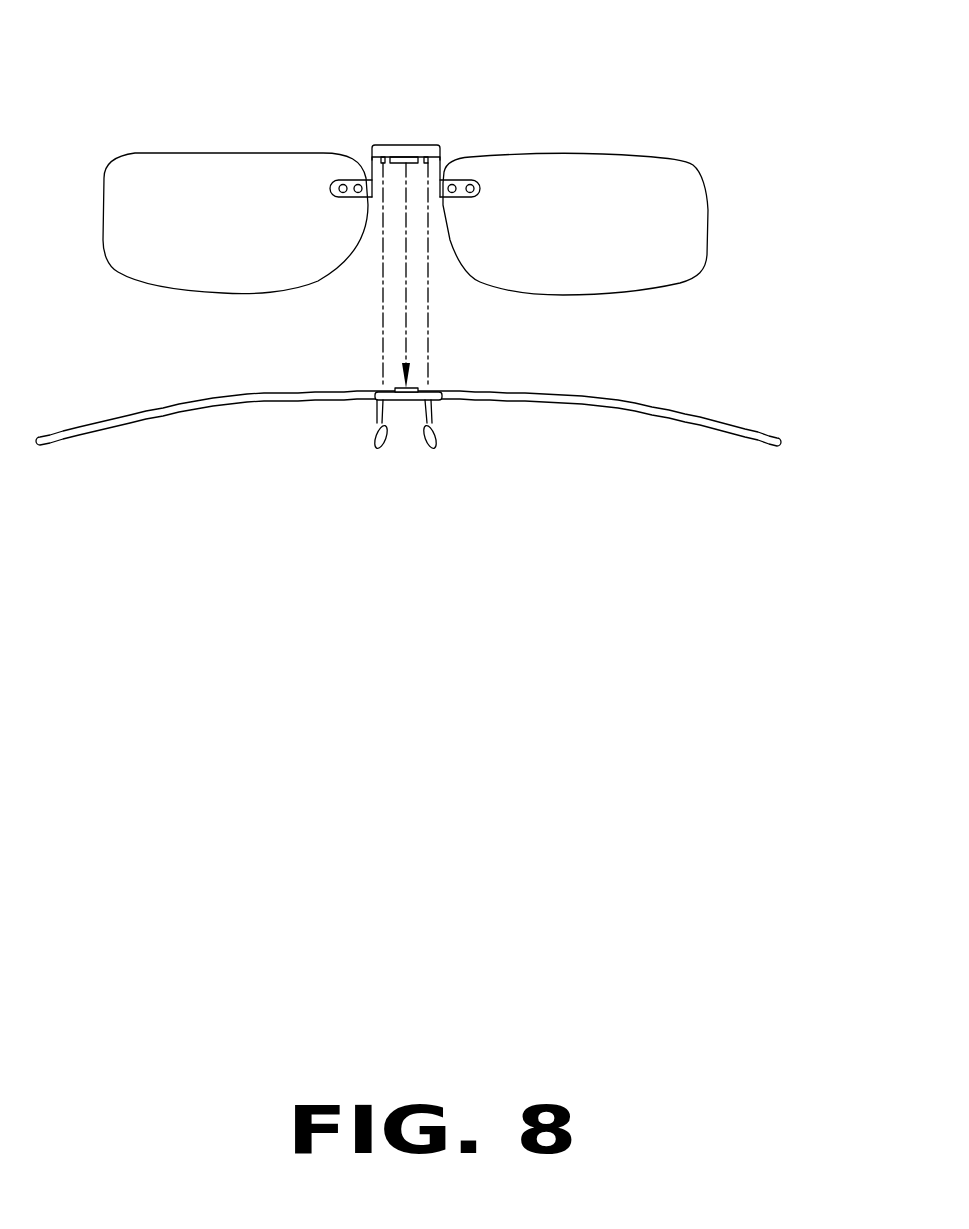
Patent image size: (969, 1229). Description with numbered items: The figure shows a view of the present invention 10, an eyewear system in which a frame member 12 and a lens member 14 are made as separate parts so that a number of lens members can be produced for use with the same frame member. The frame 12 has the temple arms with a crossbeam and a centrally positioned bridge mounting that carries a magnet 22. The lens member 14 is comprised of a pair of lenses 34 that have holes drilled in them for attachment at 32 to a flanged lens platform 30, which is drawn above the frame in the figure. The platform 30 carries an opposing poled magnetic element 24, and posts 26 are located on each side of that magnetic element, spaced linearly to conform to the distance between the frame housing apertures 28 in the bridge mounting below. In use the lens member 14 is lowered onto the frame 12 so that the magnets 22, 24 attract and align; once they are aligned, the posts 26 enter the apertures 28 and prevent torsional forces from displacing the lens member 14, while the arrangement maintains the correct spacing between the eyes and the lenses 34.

The present invention 10 is at (788, 112).
The frame member 12 is at (148, 418).
The lens member 14 is at (765, 238).
The magnet 22 is at (416, 388).
The opposing poled magnetic element 24 is at (381, 162).
The posts 26 is at (376, 146).
The frame housing apertures 28 is at (375, 391).
The flanged lens platform 30 is at (399, 146).
The attachment 32 is at (470, 184).
The lenses 34 is at (692, 265).